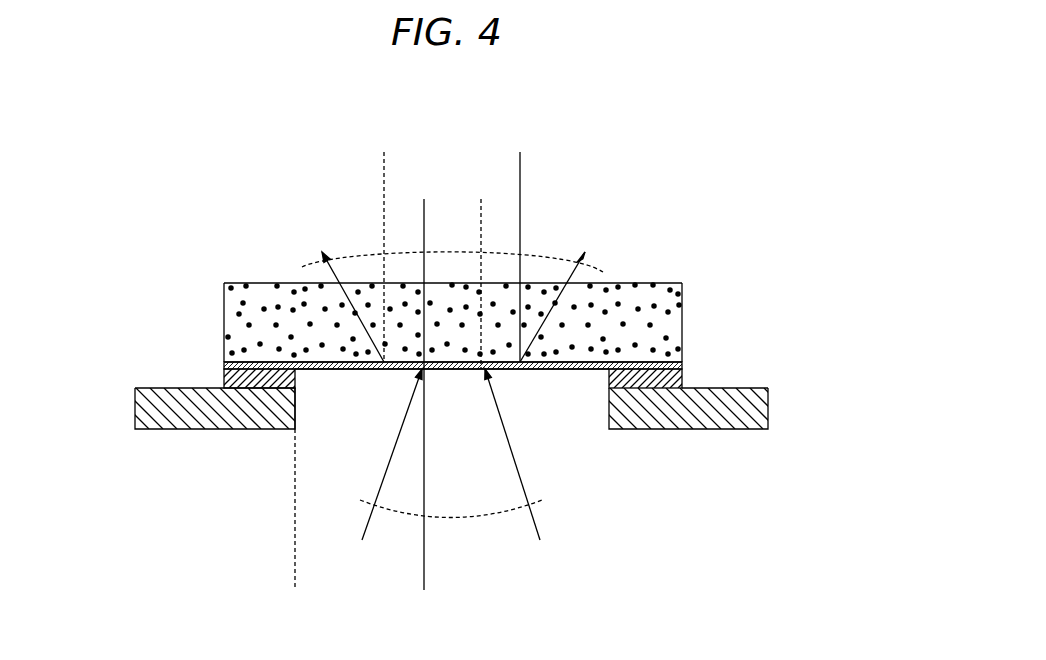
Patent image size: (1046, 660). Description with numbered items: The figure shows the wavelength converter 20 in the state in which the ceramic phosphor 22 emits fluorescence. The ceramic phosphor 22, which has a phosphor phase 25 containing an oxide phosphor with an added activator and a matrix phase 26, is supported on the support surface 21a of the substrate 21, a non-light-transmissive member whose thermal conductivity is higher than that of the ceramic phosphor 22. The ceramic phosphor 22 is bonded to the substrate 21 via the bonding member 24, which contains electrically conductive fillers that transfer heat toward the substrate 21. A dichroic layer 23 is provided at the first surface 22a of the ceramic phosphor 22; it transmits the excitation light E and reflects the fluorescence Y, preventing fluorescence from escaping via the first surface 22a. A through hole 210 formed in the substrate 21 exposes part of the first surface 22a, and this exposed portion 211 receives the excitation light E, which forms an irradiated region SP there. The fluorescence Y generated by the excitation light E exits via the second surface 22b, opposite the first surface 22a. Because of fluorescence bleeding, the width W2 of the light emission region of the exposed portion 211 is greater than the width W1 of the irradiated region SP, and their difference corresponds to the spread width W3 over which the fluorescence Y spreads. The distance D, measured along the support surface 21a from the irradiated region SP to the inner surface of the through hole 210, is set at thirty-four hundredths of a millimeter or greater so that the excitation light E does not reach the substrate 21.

The wavelength converter 20 is at (666, 168).
The substrate 21 is at (459, 459).
The support surface 21a is at (762, 392).
The through hole 210 is at (296, 405).
The exposed portion 211 is at (550, 372).
The ceramic phosphor 22 is at (391, 327).
The first surface 22a is at (509, 371).
The second surface 22b is at (262, 283).
The dichroic layer 23 is at (683, 364).
The bonding member 24 is at (683, 381).
The phosphor phase 25 is at (237, 315).
The matrix phase 26 is at (415, 339).
The width of the irradiated region W1 is at (424, 199).
The width of the light emission region W2 is at (384, 152).
The spread width W3 is at (384, 199).
The fluorescence Y is at (548, 252).
The excitation light E is at (538, 500).
The irradiated region SP is at (428, 374).
The distance D is at (424, 584).